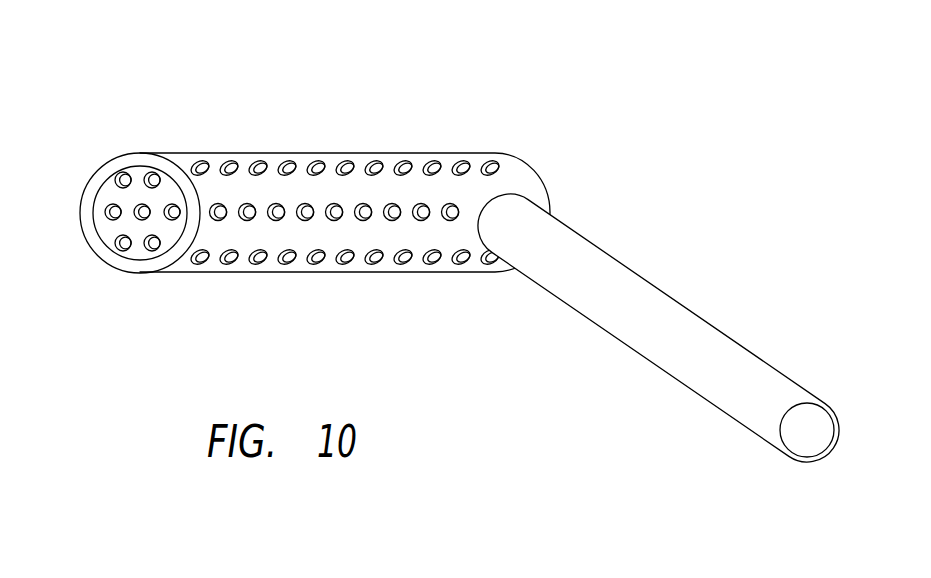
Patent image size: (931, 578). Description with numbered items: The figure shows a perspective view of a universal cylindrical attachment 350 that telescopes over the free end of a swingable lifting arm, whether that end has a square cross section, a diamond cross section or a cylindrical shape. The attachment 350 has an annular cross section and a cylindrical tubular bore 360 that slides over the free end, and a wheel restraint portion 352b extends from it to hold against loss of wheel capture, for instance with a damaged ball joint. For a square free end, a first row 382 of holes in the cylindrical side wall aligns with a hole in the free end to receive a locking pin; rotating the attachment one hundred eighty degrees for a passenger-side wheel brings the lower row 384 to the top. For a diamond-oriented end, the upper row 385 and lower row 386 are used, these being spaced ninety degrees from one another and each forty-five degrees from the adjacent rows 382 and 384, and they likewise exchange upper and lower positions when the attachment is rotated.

The attachment 350 is at (331, 137).
The first row of holes 382 is at (490, 160).
The lower row of holes 386 is at (231, 265).
The cylindrical tubular bore 360 is at (107, 193).
The upper row of holes 385 is at (122, 183).
The lower row of holes 384 is at (151, 252).
The wheel restraint portion 352b is at (675, 300).